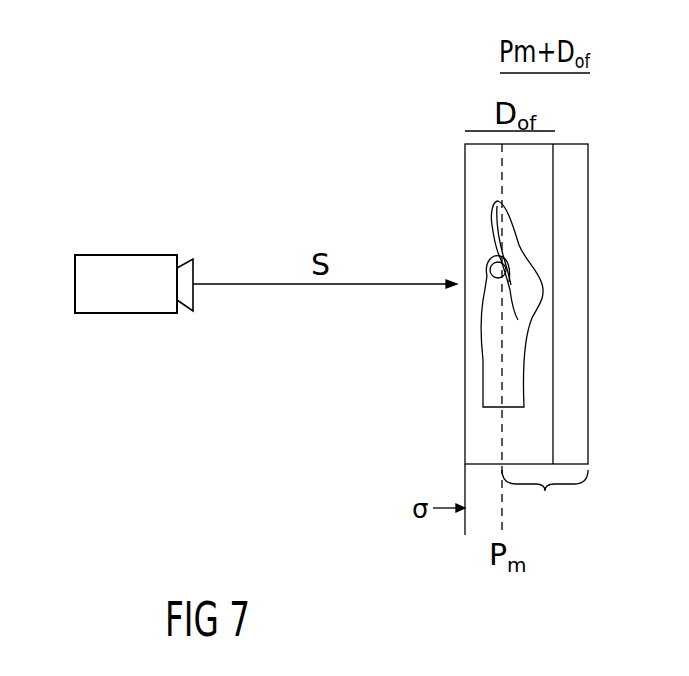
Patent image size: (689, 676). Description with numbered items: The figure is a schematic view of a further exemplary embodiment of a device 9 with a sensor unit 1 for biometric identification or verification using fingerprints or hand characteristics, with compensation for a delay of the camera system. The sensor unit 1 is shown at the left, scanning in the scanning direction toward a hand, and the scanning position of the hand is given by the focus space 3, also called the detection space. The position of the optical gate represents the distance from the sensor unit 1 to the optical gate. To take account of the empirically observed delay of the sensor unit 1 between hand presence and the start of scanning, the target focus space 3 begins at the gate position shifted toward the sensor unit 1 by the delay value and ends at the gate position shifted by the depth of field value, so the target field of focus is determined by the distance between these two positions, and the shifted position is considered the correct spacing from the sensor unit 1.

The sensor unit 1 is at (97, 284).
The device 9 is at (172, 96).
The focus space 3 is at (512, 508).